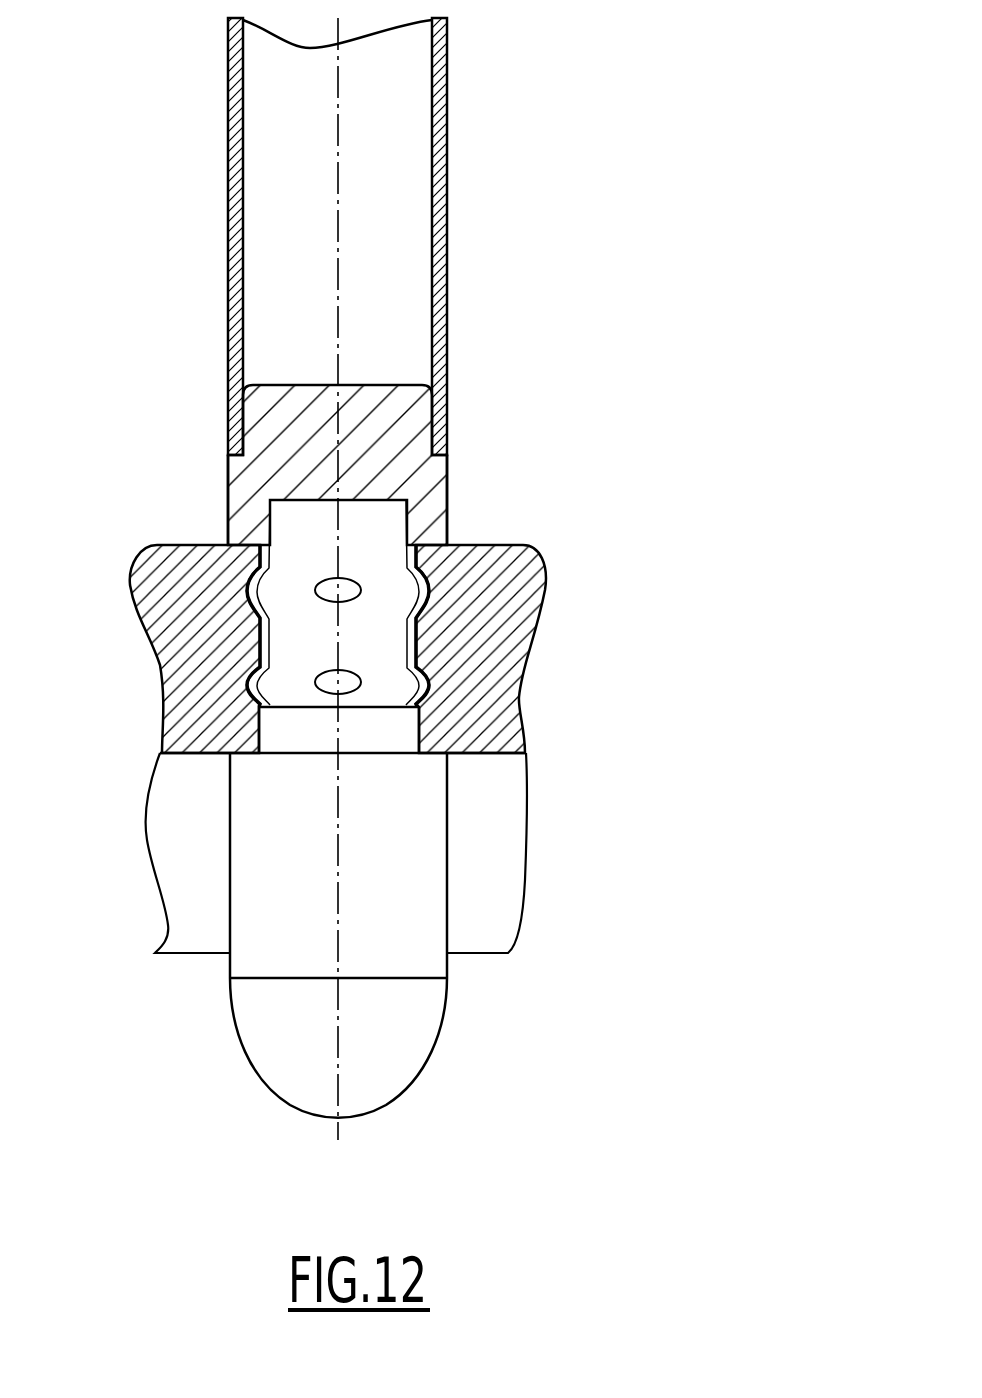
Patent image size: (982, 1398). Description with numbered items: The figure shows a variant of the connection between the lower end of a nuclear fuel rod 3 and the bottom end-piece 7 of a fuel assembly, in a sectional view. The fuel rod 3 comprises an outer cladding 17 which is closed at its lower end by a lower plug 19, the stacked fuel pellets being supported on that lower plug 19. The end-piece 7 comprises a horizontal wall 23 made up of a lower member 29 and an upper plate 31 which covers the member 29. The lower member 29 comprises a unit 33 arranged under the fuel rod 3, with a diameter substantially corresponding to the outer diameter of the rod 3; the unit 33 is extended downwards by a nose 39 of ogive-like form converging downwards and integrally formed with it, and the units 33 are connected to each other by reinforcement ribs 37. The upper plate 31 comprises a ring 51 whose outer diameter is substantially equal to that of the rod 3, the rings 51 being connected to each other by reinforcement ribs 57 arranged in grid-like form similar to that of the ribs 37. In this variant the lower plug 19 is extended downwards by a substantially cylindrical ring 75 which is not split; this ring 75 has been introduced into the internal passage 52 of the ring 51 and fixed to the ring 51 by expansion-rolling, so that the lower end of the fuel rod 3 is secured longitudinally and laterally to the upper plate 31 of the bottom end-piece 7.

The nuclear fuel rod 3 is at (455, 297).
The end-piece 7 is at (626, 887).
The outer cladding 17 is at (438, 217).
The lower plug 19 is at (287, 450).
The horizontal wall 23 is at (618, 690).
The lower member 29 is at (582, 850).
The upper plate 31 is at (498, 514).
The unit 33 is at (403, 885).
The reinforcement rib 37 is at (195, 943).
The nose 39 is at (388, 1073).
The ring 51 is at (430, 637).
The internal passage 52 is at (410, 723).
The reinforcement rib 57 is at (510, 580).
The ring 75 is at (272, 590).